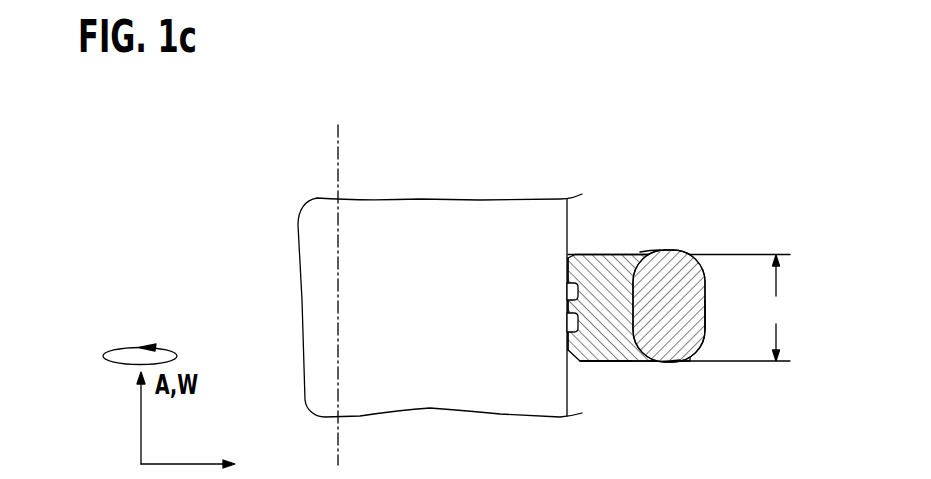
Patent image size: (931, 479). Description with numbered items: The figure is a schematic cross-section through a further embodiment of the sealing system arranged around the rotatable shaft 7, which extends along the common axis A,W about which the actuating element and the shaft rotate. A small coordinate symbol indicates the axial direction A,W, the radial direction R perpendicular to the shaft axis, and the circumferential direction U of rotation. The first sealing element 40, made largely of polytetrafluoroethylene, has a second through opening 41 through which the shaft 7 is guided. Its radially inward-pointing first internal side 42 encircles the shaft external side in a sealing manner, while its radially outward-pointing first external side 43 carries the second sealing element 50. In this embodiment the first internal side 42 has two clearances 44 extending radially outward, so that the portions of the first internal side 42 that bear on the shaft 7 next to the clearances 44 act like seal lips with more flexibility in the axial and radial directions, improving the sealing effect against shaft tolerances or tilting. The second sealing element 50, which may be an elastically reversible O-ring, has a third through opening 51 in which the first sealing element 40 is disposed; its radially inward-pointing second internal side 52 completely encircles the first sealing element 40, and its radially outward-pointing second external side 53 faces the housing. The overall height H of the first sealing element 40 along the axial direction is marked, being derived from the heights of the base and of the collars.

The rotatable shaft 7 is at (320, 245).
The first sealing element 40 is at (583, 345).
The second through opening 41 is at (575, 248).
The first internal side 42 is at (565, 272).
The first external side 43 is at (663, 363).
The clearances 44 is at (565, 295).
The second sealing element 50 is at (698, 272).
The third through opening 51 is at (655, 244).
The second internal side 52 is at (612, 342).
The second external side 53 is at (704, 318).
The overall height H is at (679, 308).
The radial direction R is at (188, 447).
The circumferential direction U is at (140, 339).
The axis / shaft axis A,W is at (336, 157).